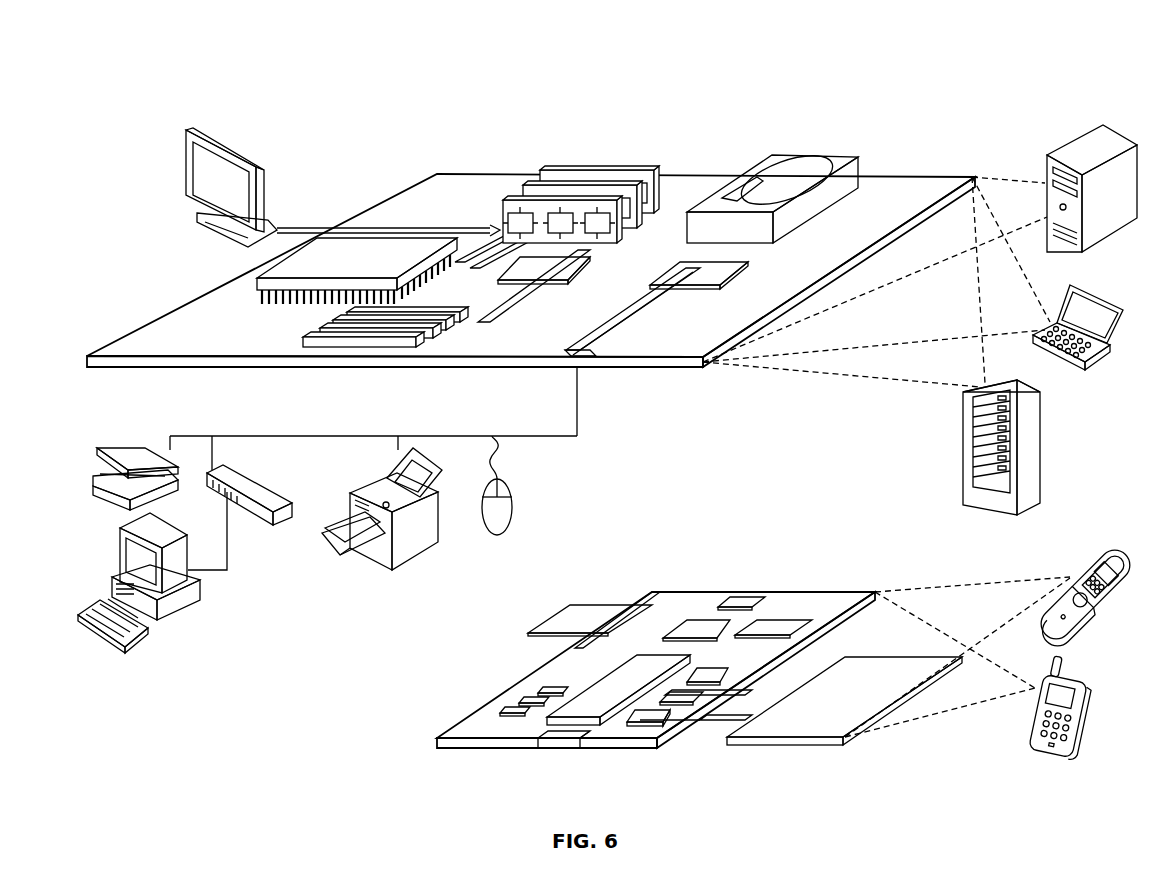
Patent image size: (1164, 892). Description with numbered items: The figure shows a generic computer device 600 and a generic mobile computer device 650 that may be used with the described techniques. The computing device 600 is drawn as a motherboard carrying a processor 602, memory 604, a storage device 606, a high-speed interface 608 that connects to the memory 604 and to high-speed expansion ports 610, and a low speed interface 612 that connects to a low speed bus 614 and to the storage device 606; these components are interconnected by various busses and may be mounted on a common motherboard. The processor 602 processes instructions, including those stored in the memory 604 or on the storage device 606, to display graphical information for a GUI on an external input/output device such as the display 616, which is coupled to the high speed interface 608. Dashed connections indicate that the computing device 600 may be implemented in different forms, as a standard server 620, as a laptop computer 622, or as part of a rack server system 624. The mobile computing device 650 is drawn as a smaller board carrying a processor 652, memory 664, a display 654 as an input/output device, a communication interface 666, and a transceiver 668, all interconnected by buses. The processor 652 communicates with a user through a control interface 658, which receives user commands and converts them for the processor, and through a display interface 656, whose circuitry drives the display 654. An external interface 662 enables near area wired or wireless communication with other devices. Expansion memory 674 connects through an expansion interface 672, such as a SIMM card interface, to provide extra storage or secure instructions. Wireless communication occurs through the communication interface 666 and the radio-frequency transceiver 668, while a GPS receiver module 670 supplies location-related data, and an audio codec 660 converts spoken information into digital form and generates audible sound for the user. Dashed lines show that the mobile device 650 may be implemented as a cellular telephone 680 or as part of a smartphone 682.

The computing device 600 is at (188, 48).
The processor 602 is at (262, 283).
The memory 604 is at (575, 170).
The storage device 606 is at (763, 178).
The high-speed interface 608 is at (545, 270).
The high-speed expansion ports 610 is at (335, 340).
The low speed interface 612 is at (680, 270).
The low speed bus 614 is at (582, 362).
The display 616 is at (186, 128).
The standard server 620 is at (1047, 170).
The laptop computer 622 is at (1108, 300).
The rack server system 624 is at (963, 450).
The mobile computer device 650 is at (418, 782).
The processor 652 is at (590, 690).
The display 654 is at (790, 722).
The display interface 656 is at (640, 724).
The control interface 658 is at (675, 705).
The audio codec 660 is at (715, 670).
The external interface 662 is at (560, 742).
The memory 664 is at (518, 704).
The communication interface 666 is at (700, 632).
The transceiver 668 is at (775, 628).
The GPS receiver module 670 is at (745, 602).
The expansion interface 672 is at (640, 600).
The expansion memory 674 is at (570, 608).
The cellular telephone 680 is at (1097, 560).
The smartphone 682 is at (1055, 753).